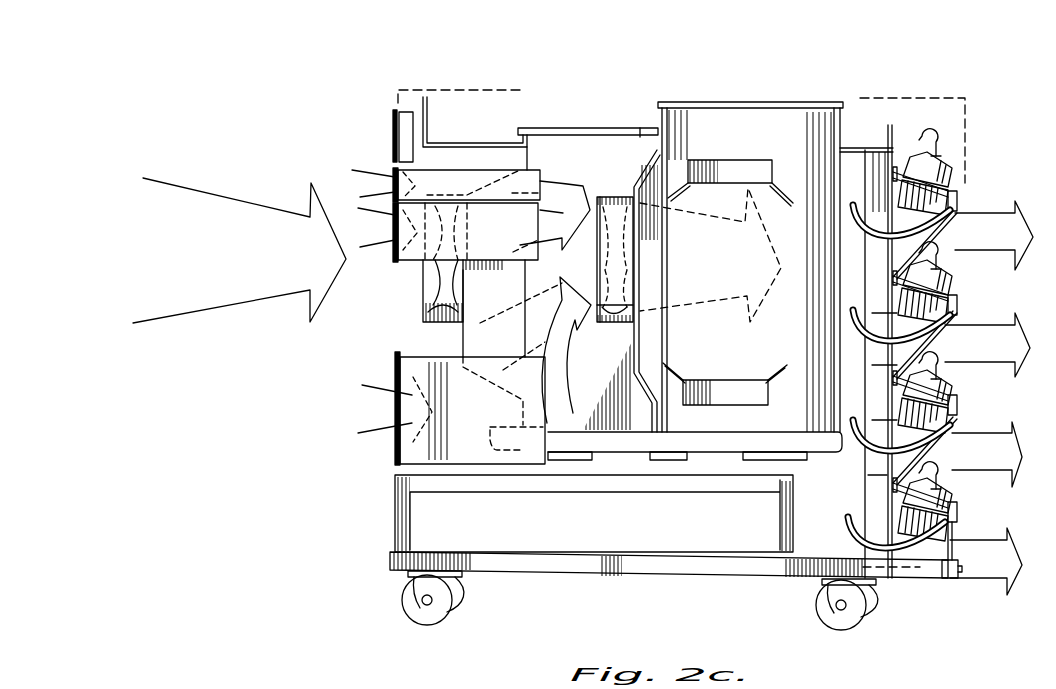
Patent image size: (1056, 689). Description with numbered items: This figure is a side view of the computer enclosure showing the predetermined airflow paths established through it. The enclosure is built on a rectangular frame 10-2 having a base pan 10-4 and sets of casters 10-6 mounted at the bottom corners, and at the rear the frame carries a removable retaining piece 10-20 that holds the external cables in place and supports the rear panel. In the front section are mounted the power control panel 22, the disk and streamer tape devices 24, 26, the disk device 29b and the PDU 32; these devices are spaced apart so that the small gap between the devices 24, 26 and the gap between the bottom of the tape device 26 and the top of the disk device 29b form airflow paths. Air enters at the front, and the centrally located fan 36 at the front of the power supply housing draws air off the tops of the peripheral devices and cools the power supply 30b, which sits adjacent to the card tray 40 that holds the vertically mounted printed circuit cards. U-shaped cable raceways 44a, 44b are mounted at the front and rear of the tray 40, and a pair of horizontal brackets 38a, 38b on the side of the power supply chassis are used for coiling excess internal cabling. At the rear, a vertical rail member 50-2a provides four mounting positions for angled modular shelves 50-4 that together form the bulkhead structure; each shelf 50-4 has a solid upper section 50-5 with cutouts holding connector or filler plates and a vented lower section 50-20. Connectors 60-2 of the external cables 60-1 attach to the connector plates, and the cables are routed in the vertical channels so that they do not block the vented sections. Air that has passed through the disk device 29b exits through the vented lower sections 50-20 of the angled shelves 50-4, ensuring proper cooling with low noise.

The frame 10-2 is at (453, 89).
The base pan 10-4 is at (390, 558).
The casters 10-6 is at (452, 603).
The retaining piece 10-20 is at (953, 578).
The power control panel 22 is at (395, 126).
The disk and streamer tape device 24 is at (517, 183).
The disk and streamer tape device 26 is at (497, 239).
The disk device 29b is at (488, 417).
The power supply 30b is at (733, 102).
The PDU 32 is at (587, 529).
The fan 36 is at (612, 197).
The horizontal bracket 38a is at (720, 160).
The horizontal bracket 38b is at (731, 380).
The card tray 40 is at (590, 128).
The cable raceway 44a is at (461, 146).
The cable raceway 44b is at (870, 150).
The vertical rail member 50-2a is at (868, 476).
The modular shelf 50-4 is at (972, 186).
The solid upper section 50-5 is at (962, 325).
The vented lower section 50-20 is at (948, 410).
The external cable 60-1 is at (942, 130).
The connector 60-2 is at (948, 163).